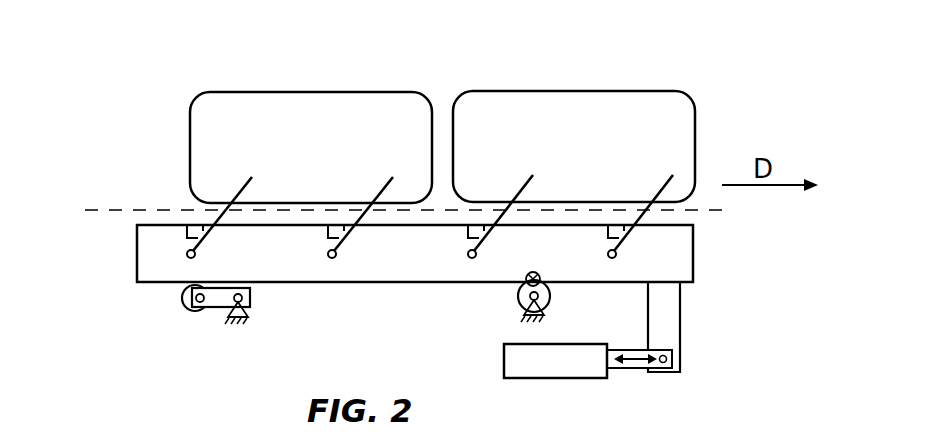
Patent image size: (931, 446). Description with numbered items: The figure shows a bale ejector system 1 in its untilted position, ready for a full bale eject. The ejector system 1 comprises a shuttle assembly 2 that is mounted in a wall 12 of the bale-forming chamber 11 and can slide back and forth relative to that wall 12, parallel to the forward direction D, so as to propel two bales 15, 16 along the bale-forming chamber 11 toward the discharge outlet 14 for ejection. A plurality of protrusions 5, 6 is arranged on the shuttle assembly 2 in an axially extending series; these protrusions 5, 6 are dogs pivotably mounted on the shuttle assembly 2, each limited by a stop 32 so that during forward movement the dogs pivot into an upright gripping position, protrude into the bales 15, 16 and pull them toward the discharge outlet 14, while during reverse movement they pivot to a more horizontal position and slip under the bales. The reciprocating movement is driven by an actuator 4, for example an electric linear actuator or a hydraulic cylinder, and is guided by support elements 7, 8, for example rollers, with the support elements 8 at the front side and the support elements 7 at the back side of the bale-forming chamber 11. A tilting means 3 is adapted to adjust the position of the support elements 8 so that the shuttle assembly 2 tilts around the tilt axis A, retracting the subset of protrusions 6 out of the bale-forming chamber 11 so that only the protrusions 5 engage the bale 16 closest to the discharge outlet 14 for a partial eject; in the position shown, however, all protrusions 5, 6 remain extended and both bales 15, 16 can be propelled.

The ejector system 1 is at (355, 306).
The shuttle assembly 2 is at (324, 283).
The tilting means 3 is at (228, 314).
The actuator 4 is at (558, 379).
The protrusions 5 is at (533, 176).
The protrusions 6 is at (252, 178).
The support elements 7 is at (550, 299).
The support elements 8 is at (189, 311).
The bale-forming chamber 11 is at (321, 58).
The wall 12 is at (133, 210).
The discharge outlet 14 is at (750, 228).
The bale 15 is at (293, 92).
The bale 16 is at (601, 91).
The stop 32 is at (187, 232).